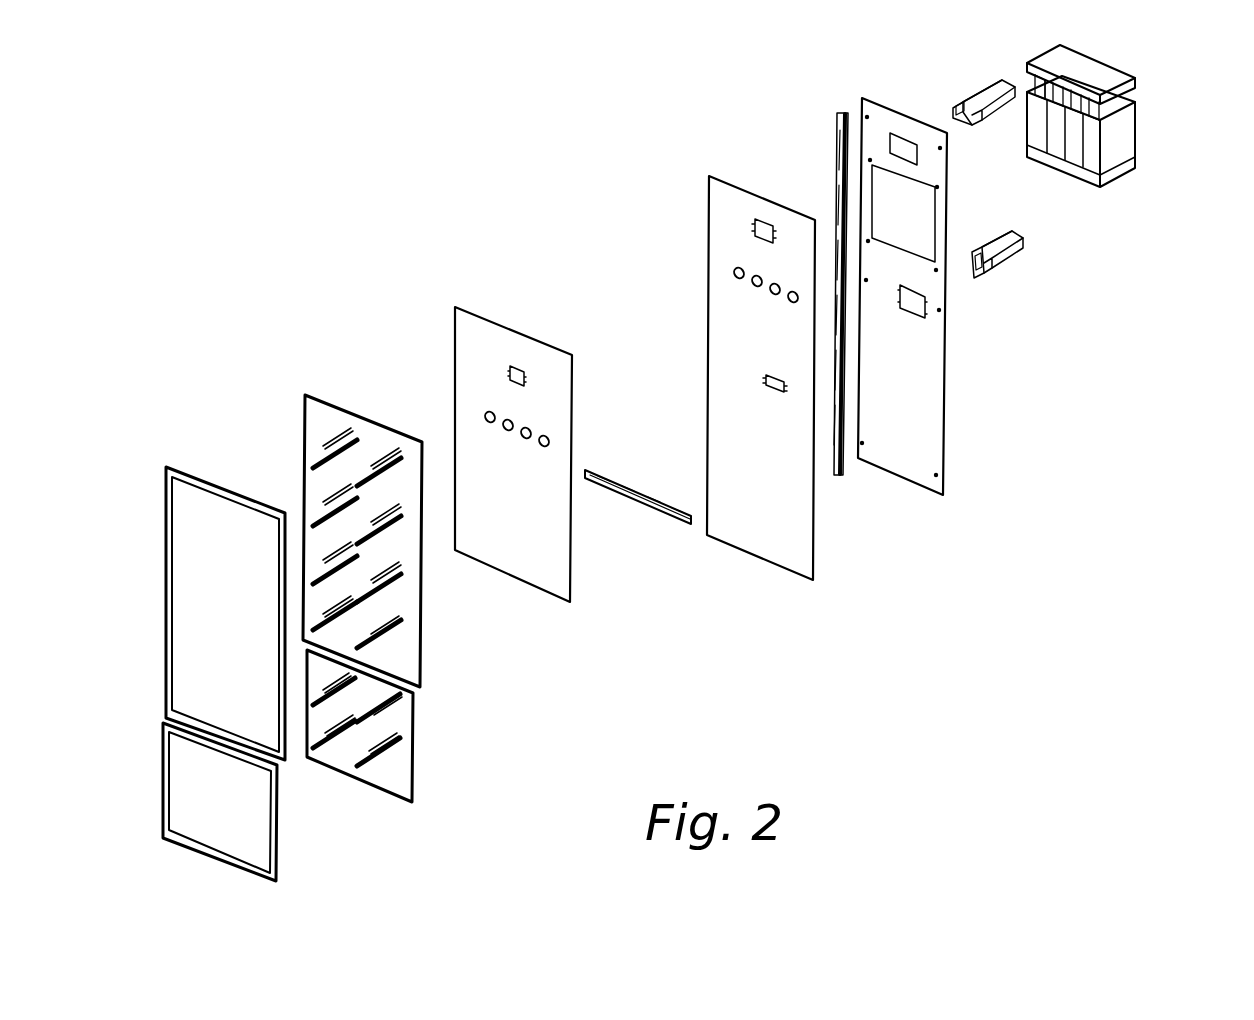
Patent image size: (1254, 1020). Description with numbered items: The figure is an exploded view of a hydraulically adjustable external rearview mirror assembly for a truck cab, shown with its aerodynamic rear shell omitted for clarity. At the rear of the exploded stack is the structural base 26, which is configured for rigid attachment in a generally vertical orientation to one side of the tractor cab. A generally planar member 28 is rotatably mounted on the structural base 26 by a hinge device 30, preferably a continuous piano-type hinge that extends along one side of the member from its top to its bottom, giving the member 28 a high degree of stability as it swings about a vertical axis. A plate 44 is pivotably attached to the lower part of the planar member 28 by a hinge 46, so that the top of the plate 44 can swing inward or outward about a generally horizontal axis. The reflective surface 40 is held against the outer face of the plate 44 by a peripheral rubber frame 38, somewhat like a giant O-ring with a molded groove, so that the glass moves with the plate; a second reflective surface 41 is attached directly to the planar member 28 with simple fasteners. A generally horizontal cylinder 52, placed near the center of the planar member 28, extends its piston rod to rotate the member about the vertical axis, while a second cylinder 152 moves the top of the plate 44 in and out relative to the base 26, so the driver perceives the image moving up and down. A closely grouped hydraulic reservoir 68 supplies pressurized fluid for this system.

The structural base 26 is at (915, 440).
The generally planar member 28 is at (727, 206).
The hinge device 30 is at (838, 125).
The peripheral rubber frame 38 is at (160, 627).
The reflective surface 40 is at (400, 660).
The reflective surface 41 is at (397, 777).
The plate 44 is at (548, 573).
The hinge 46 is at (640, 495).
The cylinder 52 is at (1010, 262).
The reservoir 68 is at (1115, 137).
The second cylinder 152 is at (975, 95).